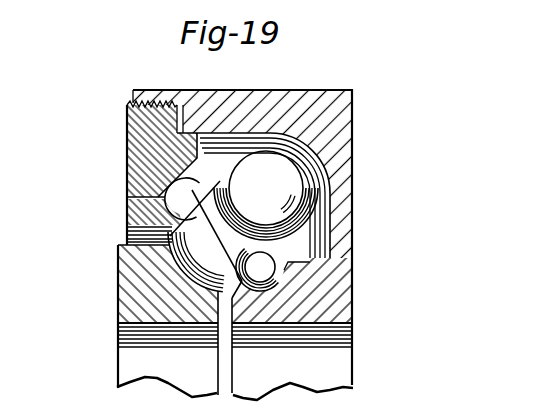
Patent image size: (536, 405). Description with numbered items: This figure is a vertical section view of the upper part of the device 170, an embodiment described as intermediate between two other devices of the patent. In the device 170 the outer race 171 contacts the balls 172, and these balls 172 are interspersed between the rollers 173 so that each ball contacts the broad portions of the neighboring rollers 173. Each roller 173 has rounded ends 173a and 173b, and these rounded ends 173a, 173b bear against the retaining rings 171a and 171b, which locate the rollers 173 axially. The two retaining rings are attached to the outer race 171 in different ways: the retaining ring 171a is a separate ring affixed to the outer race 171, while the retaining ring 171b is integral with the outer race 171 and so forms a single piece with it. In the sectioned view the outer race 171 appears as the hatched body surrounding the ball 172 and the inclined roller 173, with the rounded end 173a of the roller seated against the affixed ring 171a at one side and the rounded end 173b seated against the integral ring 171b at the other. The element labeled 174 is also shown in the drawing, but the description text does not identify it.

The device 170 is at (130, 53).
The outer race 171 is at (355, 113).
The retaining ring 171a is at (183, 223).
The retaining ring 171b is at (243, 297).
The balls 172 is at (276, 189).
The rollers 173 is at (273, 247).
The rounded end 173a is at (188, 196).
The rounded end 173b is at (275, 266).
The retainer block 174 is at (117, 279).